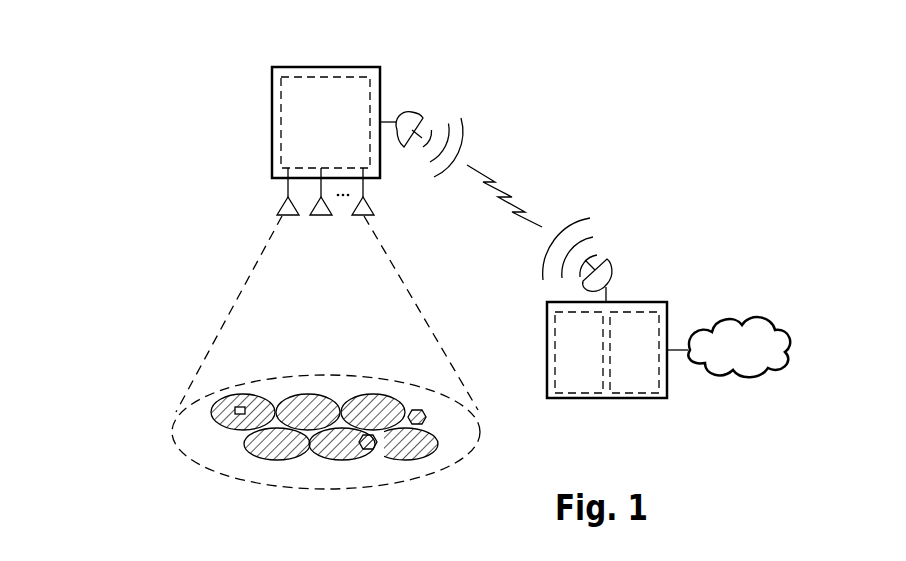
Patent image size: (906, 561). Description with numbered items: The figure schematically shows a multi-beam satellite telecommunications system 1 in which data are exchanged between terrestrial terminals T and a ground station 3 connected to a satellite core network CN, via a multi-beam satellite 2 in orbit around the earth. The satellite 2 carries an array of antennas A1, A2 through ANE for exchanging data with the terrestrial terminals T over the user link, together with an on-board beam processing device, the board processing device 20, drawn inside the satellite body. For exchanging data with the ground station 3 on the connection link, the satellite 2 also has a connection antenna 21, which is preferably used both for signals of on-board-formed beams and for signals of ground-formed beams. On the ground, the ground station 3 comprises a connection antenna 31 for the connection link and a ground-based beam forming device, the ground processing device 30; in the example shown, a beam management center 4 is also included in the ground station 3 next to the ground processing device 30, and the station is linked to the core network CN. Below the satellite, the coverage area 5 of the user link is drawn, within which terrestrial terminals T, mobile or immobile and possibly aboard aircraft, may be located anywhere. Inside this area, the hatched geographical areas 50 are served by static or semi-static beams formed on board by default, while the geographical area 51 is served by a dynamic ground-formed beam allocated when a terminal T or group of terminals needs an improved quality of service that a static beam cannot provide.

The satellite telecommunications system 1 is at (196, 144).
The multi-beam satellite 2 is at (262, 115).
The board processing device 20 is at (313, 76).
The connection antenna 21 is at (405, 115).
The antenna A1 is at (281, 202).
The antenna A2 is at (321, 217).
The antenna ANE is at (368, 212).
The coverage area 5 is at (172, 433).
The geographical areas served by beams formed on board 50 is at (262, 462).
The geographical area served by ground-formed beam 51 is at (427, 417).
The terrestrial terminal T is at (243, 406).
The ground station 3 is at (651, 292).
The ground processing device 30 is at (585, 394).
The beam management center 4 is at (628, 394).
The connection antenna 31 is at (608, 272).
The satellite core network CN is at (728, 347).